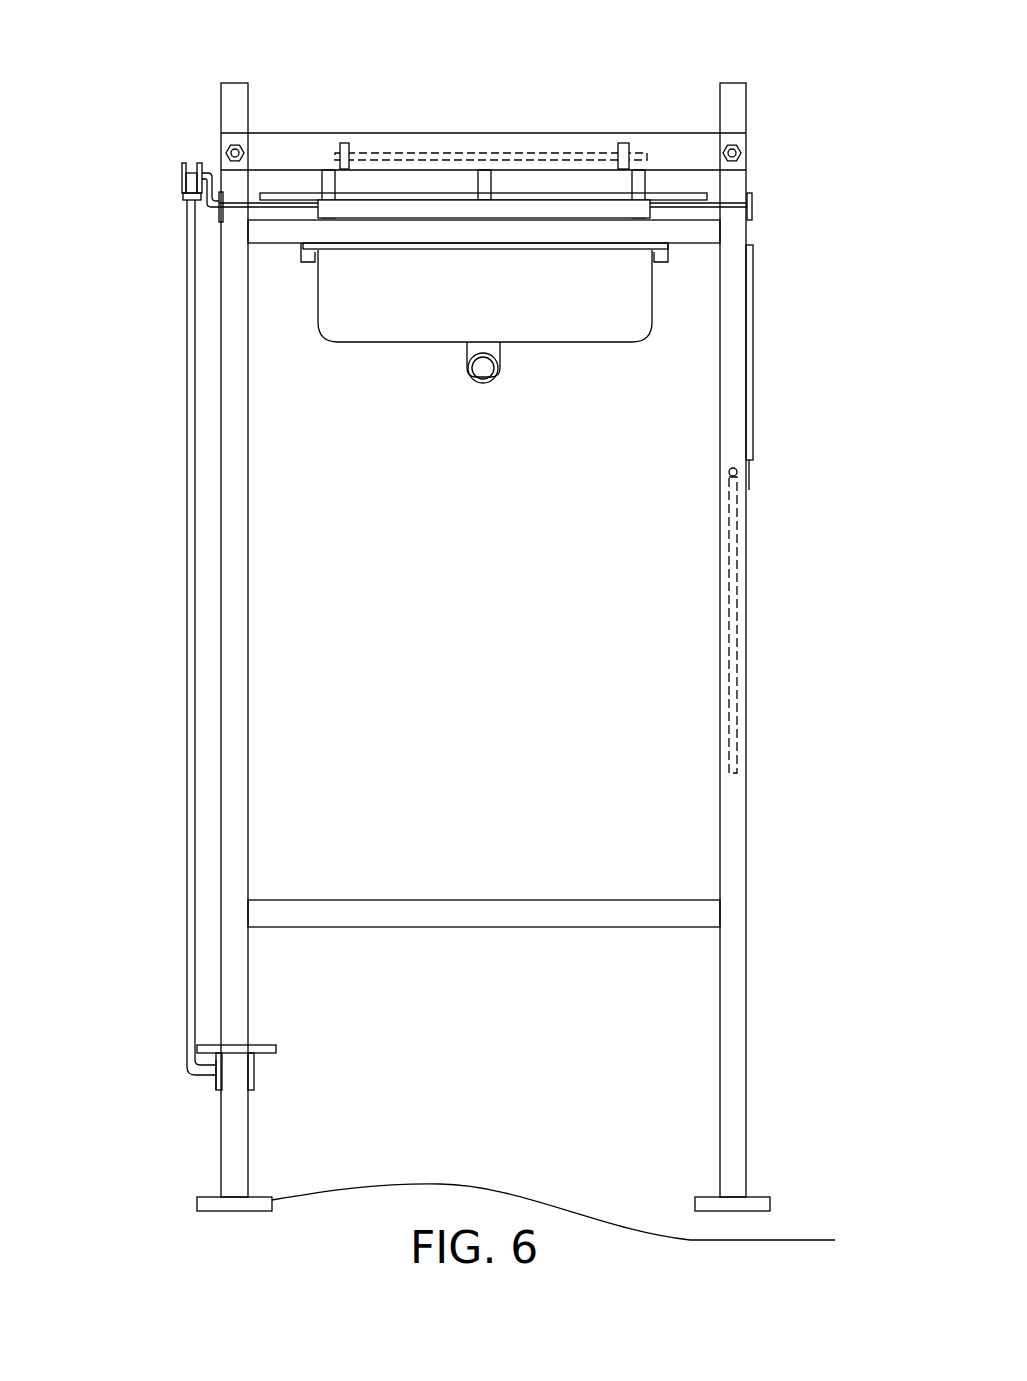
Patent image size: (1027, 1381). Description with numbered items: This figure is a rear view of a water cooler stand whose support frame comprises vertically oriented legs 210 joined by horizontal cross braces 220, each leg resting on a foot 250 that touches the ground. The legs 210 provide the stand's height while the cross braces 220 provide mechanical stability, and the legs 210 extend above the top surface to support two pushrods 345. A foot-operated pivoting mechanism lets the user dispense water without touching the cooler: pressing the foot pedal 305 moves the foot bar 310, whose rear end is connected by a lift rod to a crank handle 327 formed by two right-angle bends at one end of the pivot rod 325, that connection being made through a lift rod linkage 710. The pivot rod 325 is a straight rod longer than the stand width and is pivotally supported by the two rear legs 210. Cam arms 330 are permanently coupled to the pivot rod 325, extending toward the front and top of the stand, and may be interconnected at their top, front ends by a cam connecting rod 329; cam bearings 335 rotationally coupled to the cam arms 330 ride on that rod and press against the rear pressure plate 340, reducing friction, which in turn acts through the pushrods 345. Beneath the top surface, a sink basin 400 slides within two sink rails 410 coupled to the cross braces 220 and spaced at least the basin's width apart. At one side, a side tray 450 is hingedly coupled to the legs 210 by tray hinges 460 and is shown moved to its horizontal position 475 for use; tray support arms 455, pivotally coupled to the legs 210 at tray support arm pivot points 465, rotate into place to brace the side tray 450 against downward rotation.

The legs 210 is at (248, 850).
The cross braces 220 is at (270, 248).
The foot 250 is at (770, 1198).
The foot pedal 305 is at (270, 1045).
The foot bar 310 is at (215, 1090).
The pivot rod 325 is at (708, 203).
The crank handle 327 is at (178, 175).
The cam connecting rod 329 is at (545, 150).
The cam arms 330 is at (327, 185).
The cam bearings 335 is at (348, 143).
The rear pressure plate 340 is at (265, 133).
The pushrods 345 is at (228, 148).
The sink basin 400 is at (405, 343).
The sink rails 410 is at (305, 262).
The side tray 450 is at (478, 383).
The tray support arms 455 is at (737, 617).
The tray hinges 460 is at (752, 243).
The tray support arm pivot points 465 is at (730, 478).
The horizontal position 475 is at (808, 427).
The lift rod linkage 710 is at (184, 191).